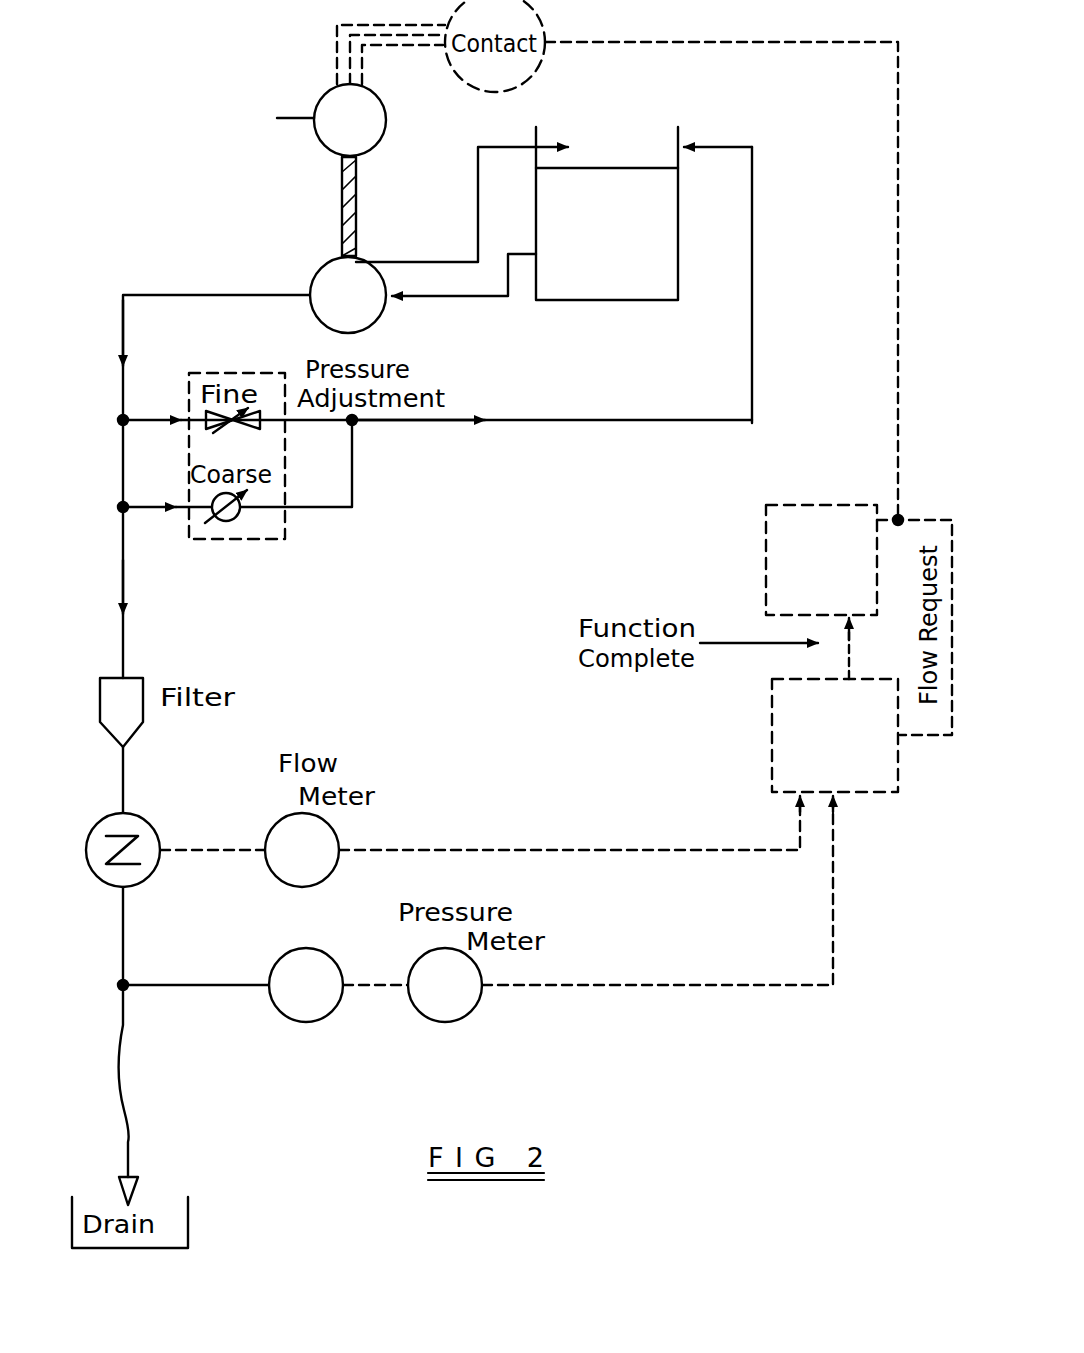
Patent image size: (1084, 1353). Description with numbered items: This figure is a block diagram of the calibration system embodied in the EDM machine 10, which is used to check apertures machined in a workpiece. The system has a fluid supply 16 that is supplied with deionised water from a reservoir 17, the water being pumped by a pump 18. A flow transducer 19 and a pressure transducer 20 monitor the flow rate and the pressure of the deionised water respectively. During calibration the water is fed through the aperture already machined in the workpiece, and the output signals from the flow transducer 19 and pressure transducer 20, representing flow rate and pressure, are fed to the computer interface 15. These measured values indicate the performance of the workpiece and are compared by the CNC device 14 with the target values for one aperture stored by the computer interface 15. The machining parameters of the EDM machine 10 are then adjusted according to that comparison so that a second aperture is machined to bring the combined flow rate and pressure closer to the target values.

The EDM machine 10 is at (323, 104).
The computer numerical control (CNC) device 14 is at (775, 567).
The computer interface 15 is at (772, 770).
The fluid supply 16 is at (342, 208).
The reservoir 17 is at (612, 288).
The pump 18 is at (376, 310).
The flow transducer 19 is at (104, 812).
The pressure transducer 20 is at (323, 1007).